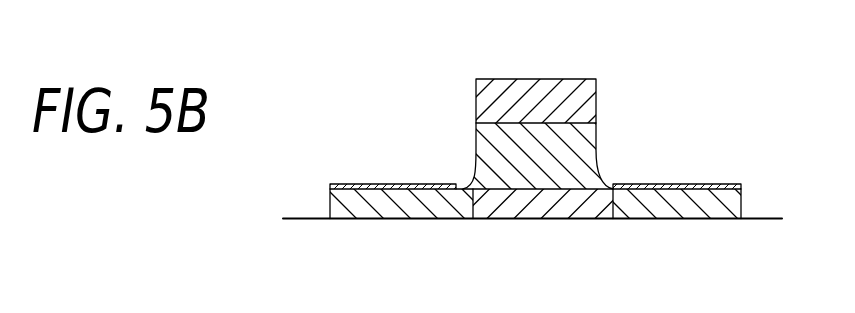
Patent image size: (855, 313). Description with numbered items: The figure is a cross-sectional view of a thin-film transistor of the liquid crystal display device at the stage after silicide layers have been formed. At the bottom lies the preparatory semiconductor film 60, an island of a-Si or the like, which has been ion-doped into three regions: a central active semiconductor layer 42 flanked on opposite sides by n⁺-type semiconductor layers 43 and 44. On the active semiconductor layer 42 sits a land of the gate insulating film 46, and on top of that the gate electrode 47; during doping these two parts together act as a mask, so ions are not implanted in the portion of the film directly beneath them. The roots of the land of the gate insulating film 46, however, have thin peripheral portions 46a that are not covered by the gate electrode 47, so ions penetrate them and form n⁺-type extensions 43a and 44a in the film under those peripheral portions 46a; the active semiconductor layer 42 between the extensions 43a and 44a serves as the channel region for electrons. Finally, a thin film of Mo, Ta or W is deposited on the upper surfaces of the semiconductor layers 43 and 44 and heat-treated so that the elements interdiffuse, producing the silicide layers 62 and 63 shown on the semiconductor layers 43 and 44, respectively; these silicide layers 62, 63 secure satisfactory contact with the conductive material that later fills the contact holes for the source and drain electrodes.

The active semiconductor layer 42 is at (530, 202).
The semiconductor layer 43 is at (372, 210).
The extension 43a is at (460, 205).
The semiconductor layer 44 is at (705, 210).
The extension 44a is at (614, 205).
The gate insulating film 46 is at (476, 146).
The peripheral portions of the roots of the lands of the gate insulating film 46a is at (467, 180).
The gate electrode 47 is at (540, 92).
The preparatory semiconductor film 60 is at (752, 205).
The silicide layer 62 is at (360, 182).
The silicide layer 63 is at (700, 183).